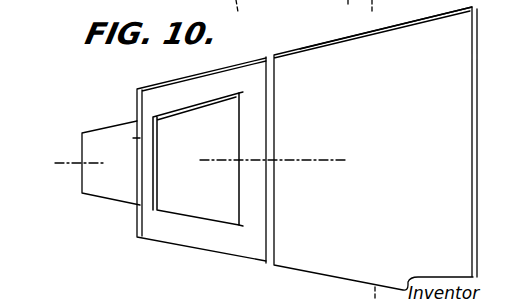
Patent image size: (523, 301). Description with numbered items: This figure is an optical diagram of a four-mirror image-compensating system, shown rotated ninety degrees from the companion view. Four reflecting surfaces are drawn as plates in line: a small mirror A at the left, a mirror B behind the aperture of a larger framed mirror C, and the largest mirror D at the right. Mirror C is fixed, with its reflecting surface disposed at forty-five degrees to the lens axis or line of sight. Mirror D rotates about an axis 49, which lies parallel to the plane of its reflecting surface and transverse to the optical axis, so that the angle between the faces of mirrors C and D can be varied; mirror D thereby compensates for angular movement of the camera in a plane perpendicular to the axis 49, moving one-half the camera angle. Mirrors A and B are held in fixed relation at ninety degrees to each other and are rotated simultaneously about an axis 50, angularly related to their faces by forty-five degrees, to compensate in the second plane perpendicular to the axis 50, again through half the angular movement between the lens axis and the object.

The axis 49 is at (375, 32).
The axis 50 is at (59, 164).
The mirror A is at (103, 137).
The mirror B is at (188, 217).
The mirror C is at (218, 78).
The mirror D is at (330, 261).